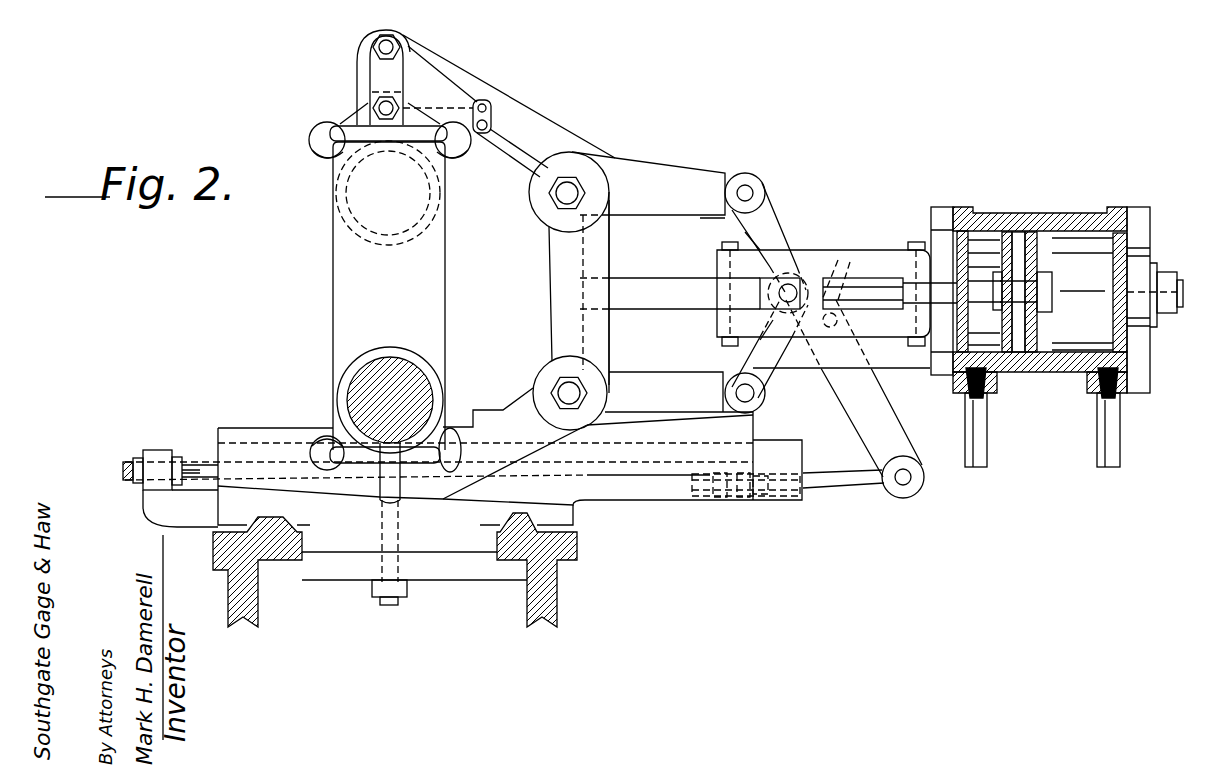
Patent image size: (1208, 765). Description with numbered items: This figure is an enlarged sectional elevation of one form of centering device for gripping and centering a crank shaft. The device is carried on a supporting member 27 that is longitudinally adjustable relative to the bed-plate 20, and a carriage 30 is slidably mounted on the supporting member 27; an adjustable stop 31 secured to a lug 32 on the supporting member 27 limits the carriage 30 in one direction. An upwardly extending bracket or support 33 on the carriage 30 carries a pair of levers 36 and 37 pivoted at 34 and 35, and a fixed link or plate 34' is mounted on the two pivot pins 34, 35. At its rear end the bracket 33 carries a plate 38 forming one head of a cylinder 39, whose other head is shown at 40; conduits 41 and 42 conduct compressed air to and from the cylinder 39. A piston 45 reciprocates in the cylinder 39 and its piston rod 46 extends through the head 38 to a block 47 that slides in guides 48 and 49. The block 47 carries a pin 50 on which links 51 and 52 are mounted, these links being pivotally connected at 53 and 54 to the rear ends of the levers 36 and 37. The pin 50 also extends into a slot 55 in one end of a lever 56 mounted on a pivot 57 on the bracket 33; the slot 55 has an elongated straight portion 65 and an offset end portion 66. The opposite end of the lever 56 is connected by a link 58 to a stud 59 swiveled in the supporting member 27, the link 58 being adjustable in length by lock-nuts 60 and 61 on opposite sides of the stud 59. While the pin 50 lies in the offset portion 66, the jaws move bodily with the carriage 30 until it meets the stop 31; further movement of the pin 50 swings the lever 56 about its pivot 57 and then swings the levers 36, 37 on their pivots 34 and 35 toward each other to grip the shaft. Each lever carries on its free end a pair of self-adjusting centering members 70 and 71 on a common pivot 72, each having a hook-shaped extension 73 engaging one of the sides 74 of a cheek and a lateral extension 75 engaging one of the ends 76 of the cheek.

The bed-plate 20 is at (568, 573).
The supporting member 27 is at (670, 497).
The carriage 30 is at (743, 433).
The adjustable stop 31 is at (200, 452).
The lug 32 is at (143, 497).
The bracket or support 33 is at (558, 314).
The pivot 34 is at (581, 172).
The fixed link or plate 34' is at (636, 292).
The pivot 35 is at (567, 393).
The lever 36 is at (652, 178).
The lever 37 is at (668, 377).
The plate 38 is at (942, 210).
The cylinder 39 is at (1063, 214).
The head 40 is at (1140, 218).
The conduit 41 is at (1105, 467).
The conduit 42 is at (972, 467).
The piston 45 is at (1017, 240).
The piston rod 46 is at (980, 290).
The block 47 is at (848, 282).
The guide 48 is at (888, 257).
The guide 49 is at (900, 340).
The pin 50 is at (790, 290).
The link 51 is at (768, 210).
The link 52 is at (770, 355).
The pivotal connection 53 is at (750, 181).
The pivotal connection 54 is at (754, 396).
The slot 55 is at (832, 285).
The lever 56 is at (882, 392).
The pivot 57 is at (842, 322).
The link 58 is at (853, 490).
The stud 59 is at (775, 500).
The lock-nut 60 is at (724, 500).
The lock-nut 61 is at (752, 500).
The elongated straight portion 65 is at (760, 235).
The offset end portion 66 is at (790, 342).
The self-adjusting centering member 70 is at (440, 117).
The self-adjusting centering member 71 is at (325, 128).
The common pivot 72 is at (385, 122).
The hook-shaped extension 73 is at (322, 152).
The side of cheek 74 is at (333, 237).
The lateral extension 75 is at (342, 130).
The end of cheek 76 is at (412, 138).